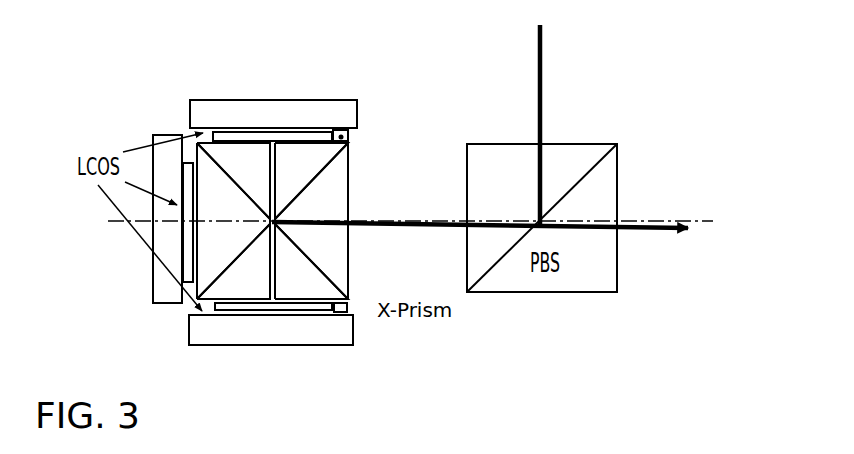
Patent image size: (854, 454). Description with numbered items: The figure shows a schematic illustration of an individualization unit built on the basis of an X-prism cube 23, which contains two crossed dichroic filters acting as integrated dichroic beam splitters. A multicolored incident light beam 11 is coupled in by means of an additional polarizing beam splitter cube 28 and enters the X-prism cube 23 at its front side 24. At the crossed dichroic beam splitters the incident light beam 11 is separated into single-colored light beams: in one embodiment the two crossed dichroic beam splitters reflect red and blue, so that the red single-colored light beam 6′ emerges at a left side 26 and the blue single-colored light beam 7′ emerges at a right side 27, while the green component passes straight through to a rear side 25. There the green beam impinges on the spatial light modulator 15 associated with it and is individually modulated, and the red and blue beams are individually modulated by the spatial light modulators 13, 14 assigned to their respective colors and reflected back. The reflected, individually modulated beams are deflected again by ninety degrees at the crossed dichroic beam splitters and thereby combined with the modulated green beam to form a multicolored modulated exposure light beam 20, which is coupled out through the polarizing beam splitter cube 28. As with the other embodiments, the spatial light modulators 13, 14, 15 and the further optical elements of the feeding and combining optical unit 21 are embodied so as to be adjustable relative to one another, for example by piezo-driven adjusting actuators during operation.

The spatial light modulator 14 is at (285, 115).
The right side 27 is at (341, 133).
The spatial light modulator 13 is at (285, 333).
The left side 26 is at (342, 312).
The spatial light modulator 15 is at (155, 237).
The rear side 25 is at (193, 297).
The blue single-colored light beam 7′ is at (270, 177).
The red single-colored light beam 6′ is at (275, 270).
The front side 24 is at (350, 197).
The X-prism cube 23 is at (343, 263).
The feeding and combining optical unit 21 is at (342, 167).
The polarizing beam splitter cube 28 is at (613, 277).
The incident light beam 11 is at (543, 67).
The exposure light beam 20 is at (648, 222).